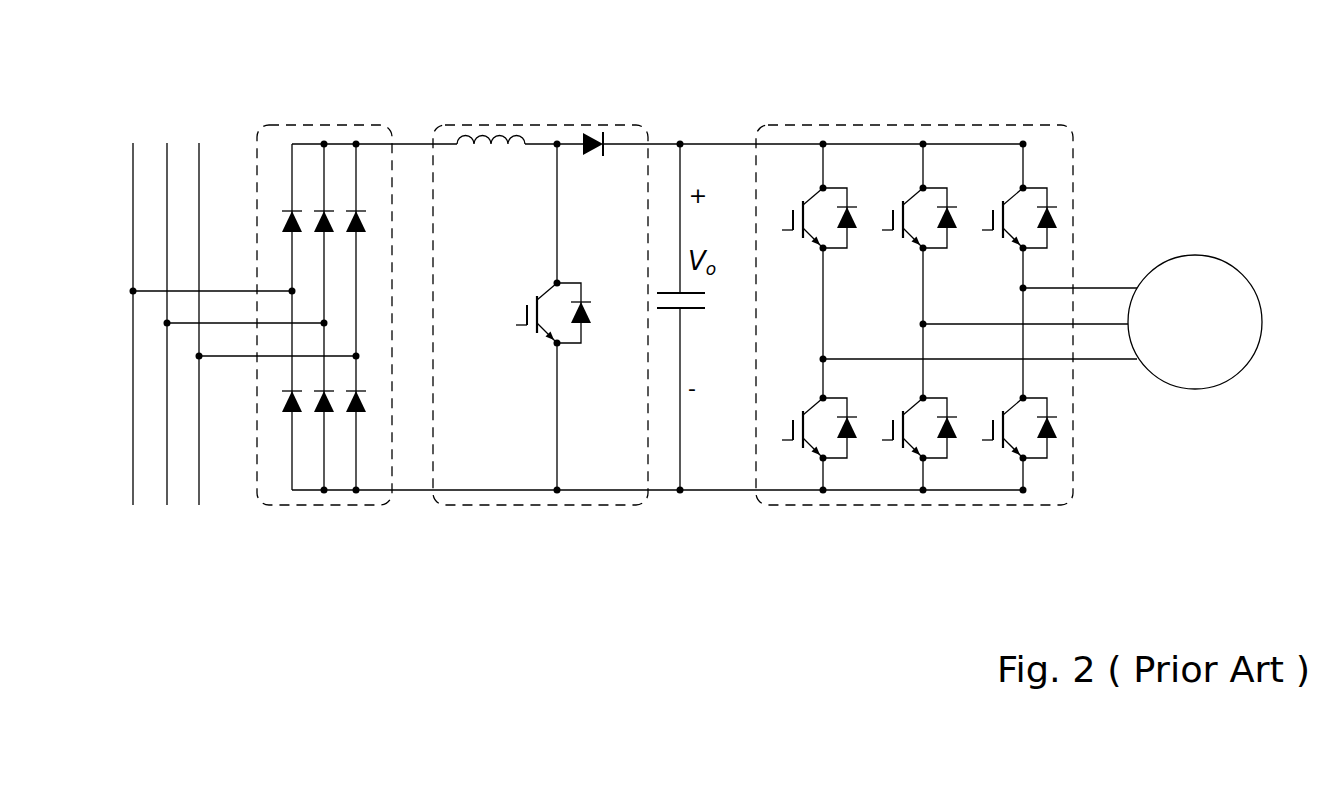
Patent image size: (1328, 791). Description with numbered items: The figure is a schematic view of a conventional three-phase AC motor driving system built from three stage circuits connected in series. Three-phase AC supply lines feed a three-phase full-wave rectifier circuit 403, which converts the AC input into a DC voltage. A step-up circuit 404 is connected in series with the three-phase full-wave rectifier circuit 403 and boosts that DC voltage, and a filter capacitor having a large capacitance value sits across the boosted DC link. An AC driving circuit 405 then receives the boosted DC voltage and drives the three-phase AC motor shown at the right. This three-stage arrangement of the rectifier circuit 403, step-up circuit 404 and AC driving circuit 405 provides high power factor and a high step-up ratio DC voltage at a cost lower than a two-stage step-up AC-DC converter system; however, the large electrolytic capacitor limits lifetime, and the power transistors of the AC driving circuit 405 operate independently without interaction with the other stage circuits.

The three-phase full-wave rectifier circuit 403 is at (309, 264).
The step-up circuit 404 is at (553, 264).
The AC driving circuit 405 is at (946, 264).